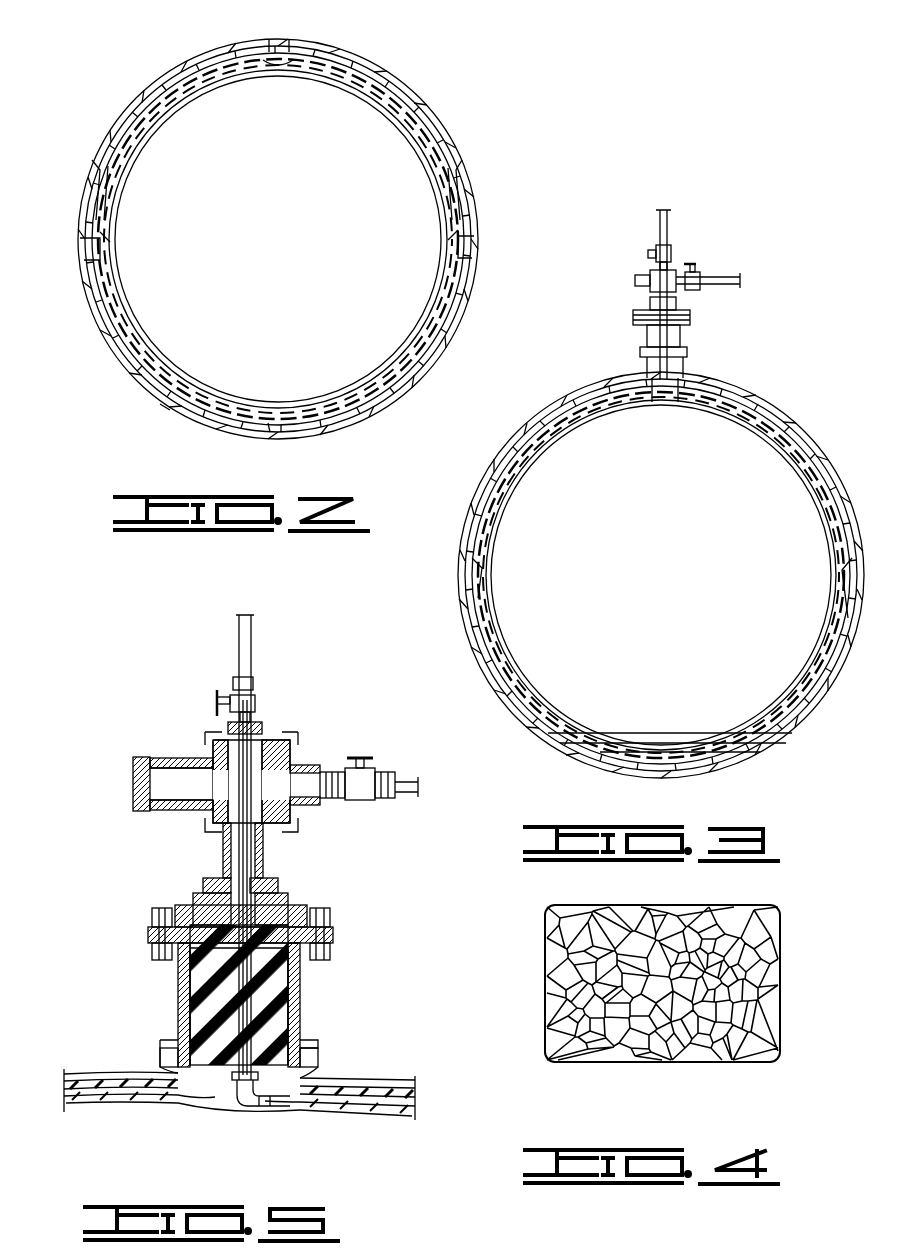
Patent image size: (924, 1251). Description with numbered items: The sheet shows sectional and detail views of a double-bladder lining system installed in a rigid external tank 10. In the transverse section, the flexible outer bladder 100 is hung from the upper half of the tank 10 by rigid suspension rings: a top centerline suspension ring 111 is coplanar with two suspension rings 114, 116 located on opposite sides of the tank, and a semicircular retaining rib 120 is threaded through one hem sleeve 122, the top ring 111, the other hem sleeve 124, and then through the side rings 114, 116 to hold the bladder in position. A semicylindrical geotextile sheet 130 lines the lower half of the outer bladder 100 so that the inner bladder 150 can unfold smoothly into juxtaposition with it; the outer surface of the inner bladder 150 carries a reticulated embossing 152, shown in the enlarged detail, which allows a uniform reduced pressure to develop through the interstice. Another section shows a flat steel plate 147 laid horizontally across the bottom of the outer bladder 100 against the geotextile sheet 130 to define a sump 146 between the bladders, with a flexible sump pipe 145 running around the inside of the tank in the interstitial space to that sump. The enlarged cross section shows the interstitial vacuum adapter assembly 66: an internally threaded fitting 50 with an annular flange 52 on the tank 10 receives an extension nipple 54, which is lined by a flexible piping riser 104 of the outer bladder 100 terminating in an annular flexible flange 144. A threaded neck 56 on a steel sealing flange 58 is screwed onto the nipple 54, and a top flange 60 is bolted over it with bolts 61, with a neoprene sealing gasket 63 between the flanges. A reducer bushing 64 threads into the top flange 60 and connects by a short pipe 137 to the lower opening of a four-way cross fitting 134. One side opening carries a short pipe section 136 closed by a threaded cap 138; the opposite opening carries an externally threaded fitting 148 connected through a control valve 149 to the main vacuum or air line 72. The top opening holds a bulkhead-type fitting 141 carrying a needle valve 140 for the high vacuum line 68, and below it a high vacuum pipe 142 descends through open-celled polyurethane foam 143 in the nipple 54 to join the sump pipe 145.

In FIG. 2, the rigid external tank 10 is at (392, 78).
In FIG. 3, the rigid external tank 10 is at (786, 413).
In FIG. 5, the rigid external tank 10 is at (64, 1075).
In FIG. 3, the internally threaded fitting 50 is at (686, 363).
In FIG. 5, the internally threaded fitting 50 is at (305, 1058).
In FIG. 3, the annular flange 52 is at (640, 352).
In FIG. 5, the annular flange 52 is at (305, 1040).
In FIG. 3, the extension nipple 54 is at (690, 318).
In FIG. 5, the extension nipple 54 is at (305, 1000).
In FIG. 5, the threaded neck 56 is at (310, 958).
In FIG. 5, the annular sealing flange 58 is at (332, 948).
In FIG. 5, the top flange 60 is at (333, 927).
In FIG. 5, the bolts 61 is at (320, 905).
In FIG. 5, the neoprene sealing gasket 63 is at (150, 930).
In FIG. 5, the reducer bushing 64 is at (285, 890).
In FIG. 3, the vacuum adapter assembly 66 is at (682, 245).
In FIG. 5, the vacuum adapter assembly 66 is at (290, 672).
In FIG. 3, the high vacuum line 68 is at (656, 217).
In FIG. 5, the high vacuum line 68 is at (235, 635).
In FIG. 3, the main vacuum or air line 72 is at (728, 280).
In FIG. 5, the main vacuum or air line 72 is at (380, 790).
In FIG. 2, the outer bladder 100 is at (350, 420).
In FIG. 3, the outer bladder 100 is at (590, 392).
In FIG. 5, the outer bladder 100 is at (120, 1075).
In FIG. 5, the piping riser 104 is at (190, 1005).
In FIG. 2, the top centerline suspension ring 111 is at (283, 50).
In FIG. 2, the suspension ring 114 is at (95, 217).
In FIG. 2, the suspension ring 116 is at (470, 215).
In FIG. 2, the retaining rib 120 is at (470, 237).
In FIG. 2, the hem sleeve 122 is at (116, 152).
In FIG. 2, the hem sleeve 124 is at (450, 152).
In FIG. 2, the geotextile sheet 130 is at (130, 340).
In FIG. 3, the geotextile sheet 130 is at (490, 622).
In FIG. 5, the four-way cross fitting 134 is at (213, 818).
In FIG. 5, the short pipe section 136 is at (182, 760).
In FIG. 5, the nipple or short section of pipe 137 is at (225, 847).
In FIG. 5, the threaded cap 138 is at (133, 786).
In FIG. 3, the needle valve 140 is at (672, 255).
In FIG. 5, the needle valve 140 is at (256, 703).
In FIG. 5, the bulkhead-type fitting 141 is at (258, 730).
In FIG. 5, the high vacuum pipe 142 is at (250, 845).
In FIG. 5, the open-celled polyurethane foam 143 is at (190, 963).
In FIG. 5, the annular flexible flange 144 is at (332, 935).
In FIG. 3, the sump pipe 145 is at (760, 440).
In FIG. 5, the sump pipe 145 is at (390, 1079).
In FIG. 3, the sump 146 is at (640, 750).
In FIG. 3, the steel plate 147 is at (668, 735).
In FIG. 5, the externally threaded fitting 148 is at (292, 798).
In FIG. 5, the control valve 149 is at (335, 770).
In FIG. 2, the inner bladder 150 is at (203, 385).
In FIG. 3, the inner bladder 150 is at (560, 446).
In FIG. 5, the inner bladder 150 is at (172, 1098).
In FIG. 4, the reticulated embossing 152 is at (772, 960).